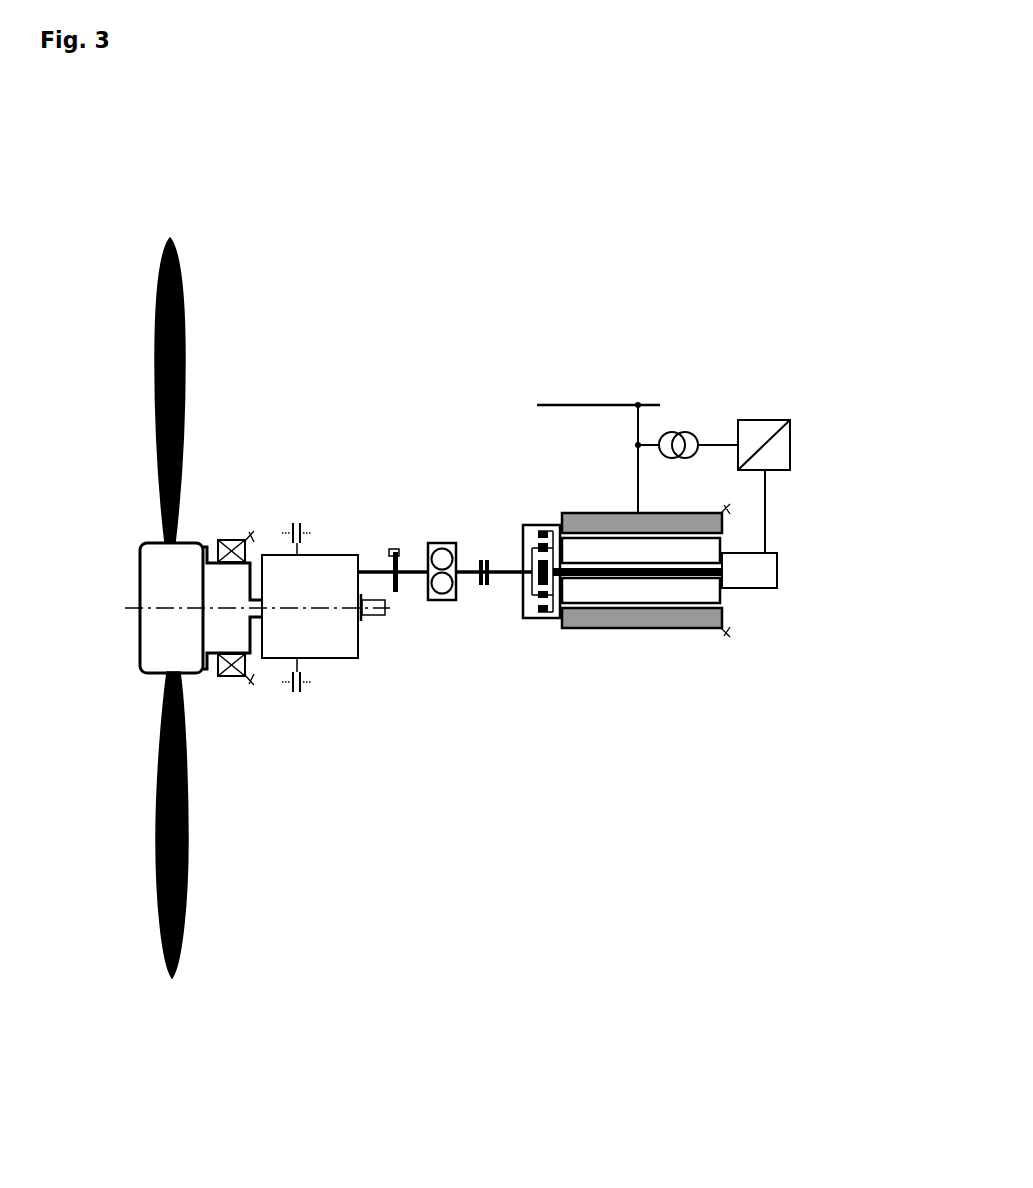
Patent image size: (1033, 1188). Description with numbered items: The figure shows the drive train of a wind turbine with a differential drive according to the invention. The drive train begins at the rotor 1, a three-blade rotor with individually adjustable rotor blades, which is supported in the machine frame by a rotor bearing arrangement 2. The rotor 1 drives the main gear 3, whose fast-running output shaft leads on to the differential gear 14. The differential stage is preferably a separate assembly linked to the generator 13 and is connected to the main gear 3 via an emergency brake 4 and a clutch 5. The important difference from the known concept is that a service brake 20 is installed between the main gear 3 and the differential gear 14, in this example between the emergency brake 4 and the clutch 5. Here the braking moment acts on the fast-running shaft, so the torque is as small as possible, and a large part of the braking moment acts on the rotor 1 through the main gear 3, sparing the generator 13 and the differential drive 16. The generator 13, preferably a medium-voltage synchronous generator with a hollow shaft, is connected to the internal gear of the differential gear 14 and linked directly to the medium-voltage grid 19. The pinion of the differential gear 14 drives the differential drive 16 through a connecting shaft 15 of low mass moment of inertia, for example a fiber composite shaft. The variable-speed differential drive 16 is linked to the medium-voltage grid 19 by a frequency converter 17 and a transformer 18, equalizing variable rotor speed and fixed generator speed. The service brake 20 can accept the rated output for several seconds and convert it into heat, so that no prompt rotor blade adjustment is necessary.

The rotor 1 is at (148, 543).
The rotor bearing arrangement 2 is at (232, 677).
The main gear 3 is at (340, 660).
The emergency brake 4 is at (391, 548).
The clutch 5 is at (488, 589).
The generator 13 is at (617, 628).
The differential gear 14 is at (518, 522).
The connecting shaft 15 is at (629, 580).
The differential drive 16 is at (745, 590).
The frequency converter 17 is at (768, 420).
The transformer 18 is at (677, 432).
The medium-voltage grid 19 is at (600, 405).
The service brake 20 is at (445, 603).